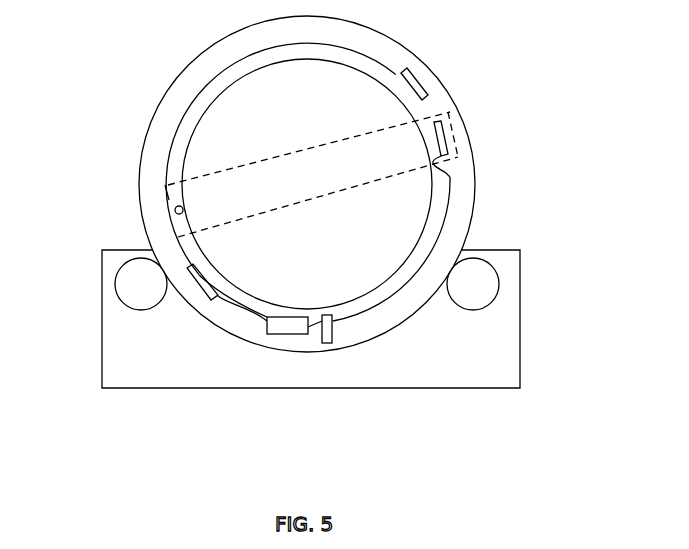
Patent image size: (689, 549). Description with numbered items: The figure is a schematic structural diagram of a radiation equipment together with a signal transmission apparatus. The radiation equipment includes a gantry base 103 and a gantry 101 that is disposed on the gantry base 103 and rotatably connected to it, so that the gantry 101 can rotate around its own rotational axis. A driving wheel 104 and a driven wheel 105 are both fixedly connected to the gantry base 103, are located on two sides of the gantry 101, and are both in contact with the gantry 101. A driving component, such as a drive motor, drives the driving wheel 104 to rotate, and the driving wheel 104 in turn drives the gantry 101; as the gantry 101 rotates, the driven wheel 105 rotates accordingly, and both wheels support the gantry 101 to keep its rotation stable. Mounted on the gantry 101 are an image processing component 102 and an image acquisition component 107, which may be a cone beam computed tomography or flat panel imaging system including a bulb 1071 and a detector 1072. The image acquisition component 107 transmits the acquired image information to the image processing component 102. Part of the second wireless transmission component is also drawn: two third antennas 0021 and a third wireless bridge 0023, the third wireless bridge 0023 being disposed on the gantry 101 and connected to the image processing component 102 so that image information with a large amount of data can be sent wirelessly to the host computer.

The gantry 101 is at (474, 208).
The image processing component 102 is at (328, 358).
The gantry base 103 is at (516, 264).
The driving wheel 104 is at (490, 295).
The driven wheel 105 is at (124, 287).
The image acquisition component 107 is at (464, 120).
The bulb 1071 is at (195, 207).
The detector 1072 is at (423, 139).
The third antenna 0021 is at (424, 73).
The third wireless bridge 0023 is at (288, 348).